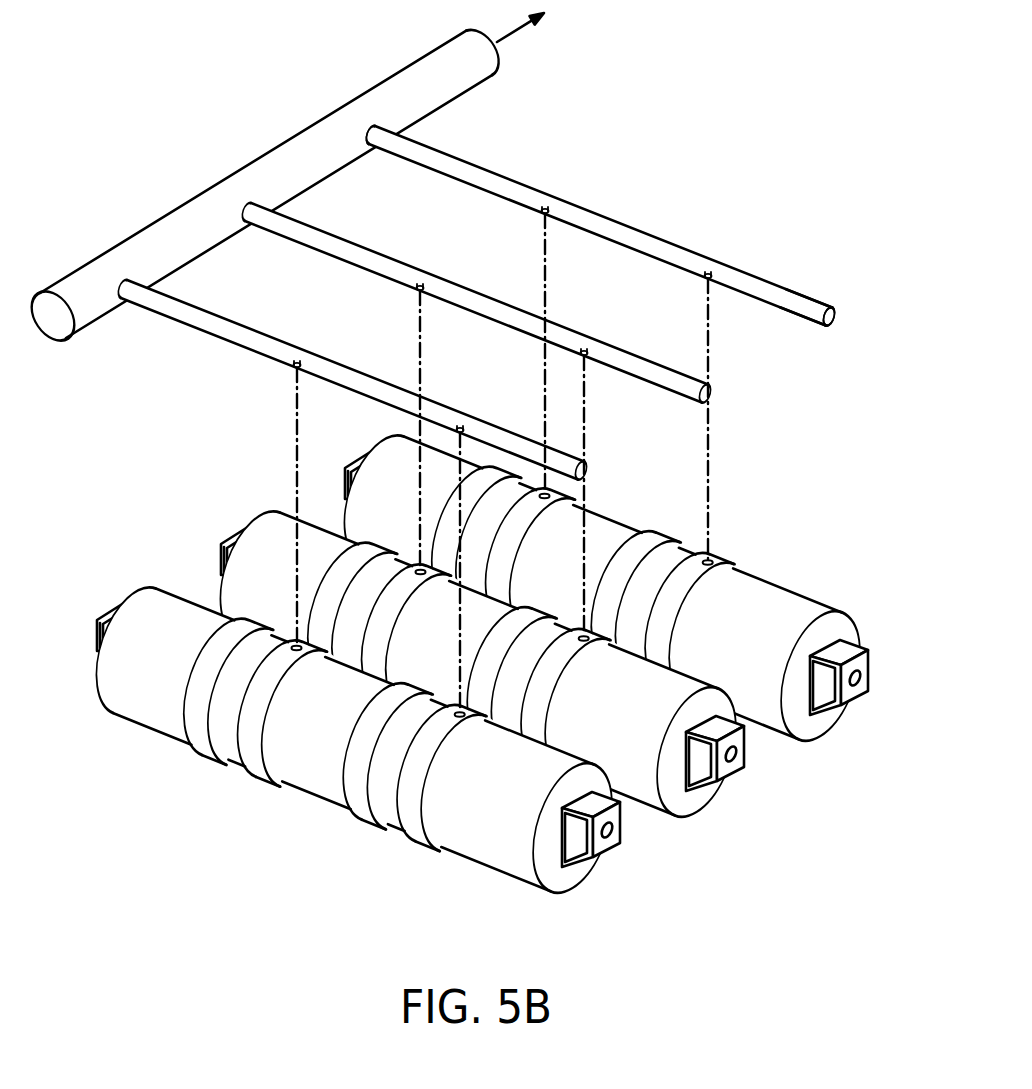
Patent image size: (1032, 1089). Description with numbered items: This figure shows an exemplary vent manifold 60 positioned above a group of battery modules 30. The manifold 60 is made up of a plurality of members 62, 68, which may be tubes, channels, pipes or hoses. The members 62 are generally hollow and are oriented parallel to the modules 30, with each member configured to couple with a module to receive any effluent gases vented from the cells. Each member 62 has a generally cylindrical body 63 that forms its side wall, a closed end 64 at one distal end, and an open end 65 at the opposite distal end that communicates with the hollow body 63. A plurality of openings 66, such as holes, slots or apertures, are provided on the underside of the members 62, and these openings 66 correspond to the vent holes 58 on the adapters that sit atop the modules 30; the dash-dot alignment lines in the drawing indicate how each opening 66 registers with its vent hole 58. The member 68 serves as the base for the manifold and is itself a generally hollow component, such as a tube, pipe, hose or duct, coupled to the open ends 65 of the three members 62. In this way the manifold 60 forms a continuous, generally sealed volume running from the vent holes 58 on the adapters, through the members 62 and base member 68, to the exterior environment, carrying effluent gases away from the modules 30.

The module 30 is at (482, 676).
The vent hole 58 is at (457, 711).
The manifold 60 is at (476, 247).
The member 62 is at (664, 243).
The body 63 is at (798, 303).
The closed end 64 is at (837, 321).
The open end 65 is at (374, 130).
The opening 66 is at (296, 360).
The member 68 is at (162, 242).